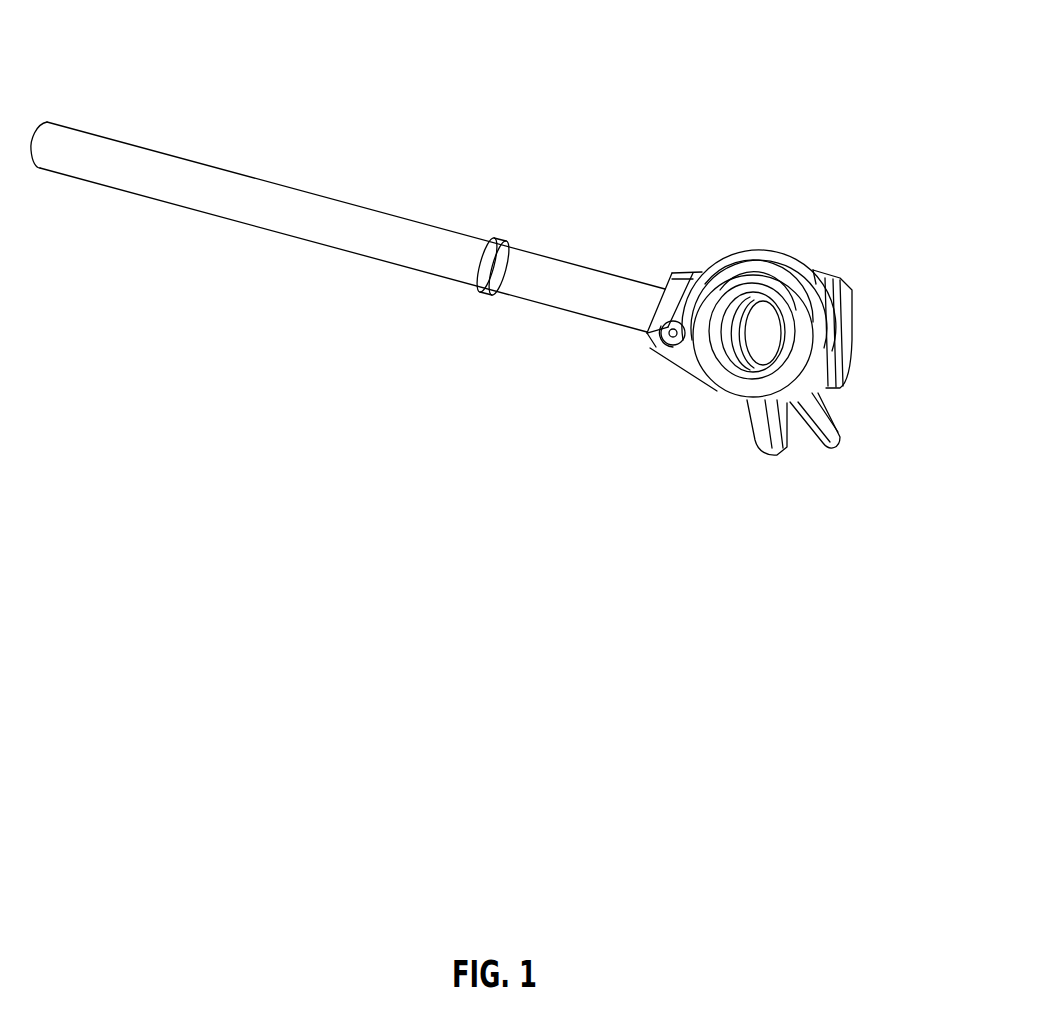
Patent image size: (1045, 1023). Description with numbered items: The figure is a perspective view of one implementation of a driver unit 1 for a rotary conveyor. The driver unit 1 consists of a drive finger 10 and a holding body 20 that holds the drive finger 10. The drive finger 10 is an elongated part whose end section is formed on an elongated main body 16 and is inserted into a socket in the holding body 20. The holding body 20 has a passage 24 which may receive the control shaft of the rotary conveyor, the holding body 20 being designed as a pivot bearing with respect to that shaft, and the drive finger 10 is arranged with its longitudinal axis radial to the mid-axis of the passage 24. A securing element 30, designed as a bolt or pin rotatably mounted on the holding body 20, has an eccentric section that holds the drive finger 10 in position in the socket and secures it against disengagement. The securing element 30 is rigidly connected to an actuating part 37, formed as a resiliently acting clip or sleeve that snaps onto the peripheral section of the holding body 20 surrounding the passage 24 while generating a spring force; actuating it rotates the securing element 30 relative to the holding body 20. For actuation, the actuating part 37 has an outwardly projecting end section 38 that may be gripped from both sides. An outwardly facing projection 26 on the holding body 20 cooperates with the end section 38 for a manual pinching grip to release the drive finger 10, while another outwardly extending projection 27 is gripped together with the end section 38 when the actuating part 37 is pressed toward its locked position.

The driver unit 1 is at (652, 184).
The drive finger 10 is at (222, 163).
The elongated main body 16 is at (437, 245).
The holding body 20 is at (704, 407).
The passage 24 is at (766, 337).
The projection 26 is at (837, 277).
The projection 27 is at (765, 435).
The securing element 30 is at (645, 354).
The actuating part 37 is at (733, 258).
The end section 38 is at (840, 430).